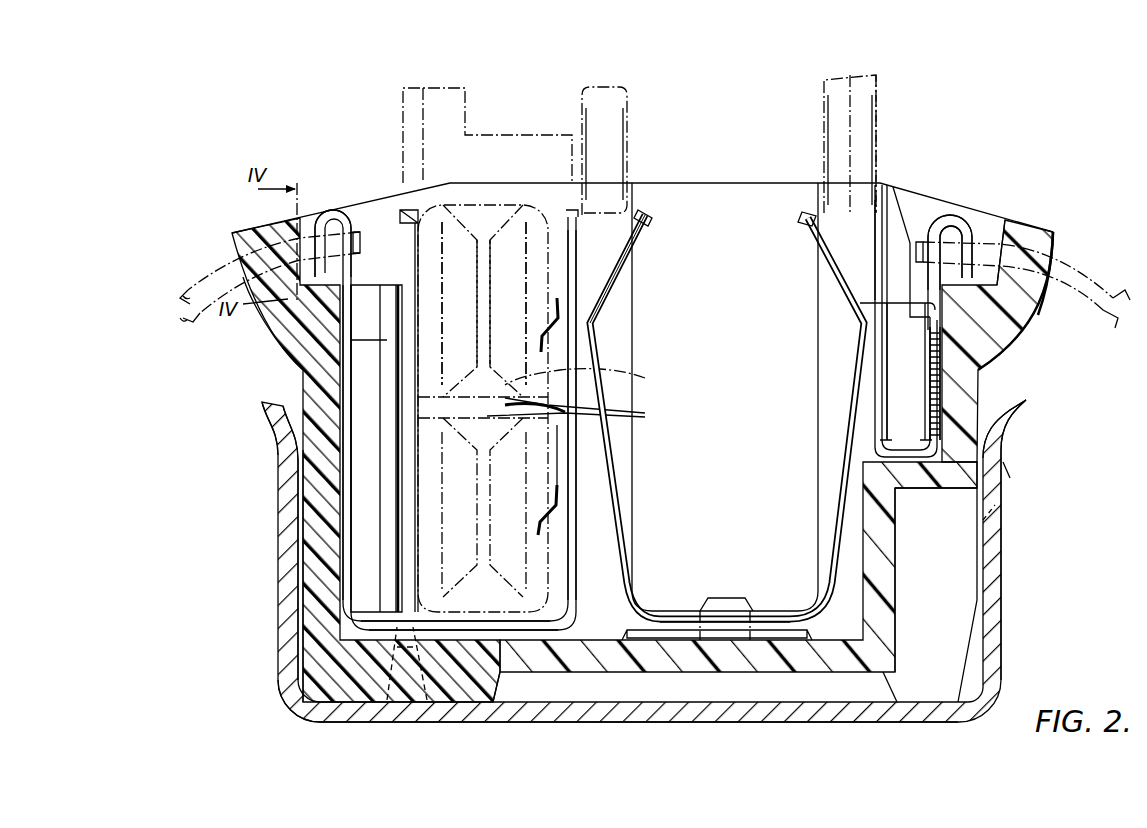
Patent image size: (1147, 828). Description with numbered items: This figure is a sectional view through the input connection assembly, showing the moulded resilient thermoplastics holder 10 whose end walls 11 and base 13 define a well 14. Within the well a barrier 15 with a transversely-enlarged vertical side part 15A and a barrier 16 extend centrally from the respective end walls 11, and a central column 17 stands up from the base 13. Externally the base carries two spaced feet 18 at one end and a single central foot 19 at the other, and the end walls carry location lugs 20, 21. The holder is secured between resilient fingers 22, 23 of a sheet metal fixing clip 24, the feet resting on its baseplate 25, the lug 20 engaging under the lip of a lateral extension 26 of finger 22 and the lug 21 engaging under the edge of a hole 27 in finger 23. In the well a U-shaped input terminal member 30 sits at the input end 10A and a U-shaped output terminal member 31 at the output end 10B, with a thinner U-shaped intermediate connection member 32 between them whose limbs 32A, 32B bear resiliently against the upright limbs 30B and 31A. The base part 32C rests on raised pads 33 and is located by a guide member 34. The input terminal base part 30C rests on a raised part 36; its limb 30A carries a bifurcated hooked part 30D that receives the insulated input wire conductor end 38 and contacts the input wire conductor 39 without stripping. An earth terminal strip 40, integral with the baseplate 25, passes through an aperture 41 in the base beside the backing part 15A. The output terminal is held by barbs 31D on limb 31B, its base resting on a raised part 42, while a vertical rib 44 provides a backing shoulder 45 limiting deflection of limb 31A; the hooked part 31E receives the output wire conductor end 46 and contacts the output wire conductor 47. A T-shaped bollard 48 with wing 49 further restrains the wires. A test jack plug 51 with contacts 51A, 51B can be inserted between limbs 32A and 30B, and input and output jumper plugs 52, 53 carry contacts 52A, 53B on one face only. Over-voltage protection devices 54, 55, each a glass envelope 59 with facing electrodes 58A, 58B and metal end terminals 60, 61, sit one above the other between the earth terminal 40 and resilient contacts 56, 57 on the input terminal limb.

The holder 10 is at (287, 357).
The input end 10A is at (260, 338).
The output end 10B is at (1030, 327).
The end walls 11 is at (960, 402).
The base 13 is at (610, 665).
The well 14 is at (712, 190).
The barrier 15 is at (370, 293).
The vertical side part 15A is at (387, 340).
The barrier 16 is at (830, 319).
The column 17 is at (627, 272).
The feet 18 is at (475, 690).
The foot 19 is at (896, 683).
The location lug 20 is at (277, 458).
The location lug 21 is at (1008, 472).
The resilient finger 22 is at (280, 606).
The resilient finger 23 is at (997, 620).
The fixing clip 24 is at (276, 674).
The baseplate 25 is at (670, 710).
The lateral extension 26 is at (268, 442).
The hole 27 is at (985, 530).
The input terminal member 30 is at (356, 224).
The limb 30A is at (343, 368).
The limb 30B is at (576, 247).
The base part 30C is at (540, 632).
The bifurcated hooked part 30D is at (336, 210).
The output terminal member 31 is at (926, 226).
The limb 31A is at (875, 250).
The limb 31B is at (860, 303).
The barbs 31D is at (940, 372).
The bifurcated hooked part 31E is at (939, 212).
The intermediate connection member 32 is at (806, 212).
The limb 32A is at (645, 208).
The limb 32B is at (806, 233).
The base part 32C is at (656, 618).
The pads 33 is at (640, 636).
The guide member 34 is at (740, 611).
The raised part 36 is at (483, 645).
The insulated input wire conductor end 38 is at (192, 280).
The input wire conductor 39 is at (178, 297).
The earth terminal strip 40 is at (403, 247).
The aperture 41 is at (403, 700).
The raised part 42 is at (918, 485).
The vertical rib 44 is at (920, 407).
The backing shoulders 45 is at (887, 362).
The insulated output wire conductor end 46 is at (1068, 270).
The output wire conductor 47 is at (1117, 290).
The T-shaped bollard 48 is at (1012, 230).
The wing 49 is at (1040, 243).
The test jack plug 51 is at (596, 86).
The electrical contacts 51A is at (582, 122).
The electrical contacts 51B is at (632, 128).
The input jumper plug 52 is at (822, 84).
The electrical contacts 52A is at (824, 126).
The output jumper plug 53 is at (877, 84).
The electrical contacts 53B is at (878, 130).
The over-voltage protection device 54 is at (505, 205).
The over-voltage protection device 55 is at (567, 413).
The resilient contact 56 is at (538, 337).
The resilient contact 57 is at (538, 528).
The electrode 58A is at (584, 412).
The electrode 58B is at (593, 378).
The glass envelope 59 is at (470, 190).
The metal end terminal 60 is at (452, 287).
The metal end terminal 61 is at (512, 287).